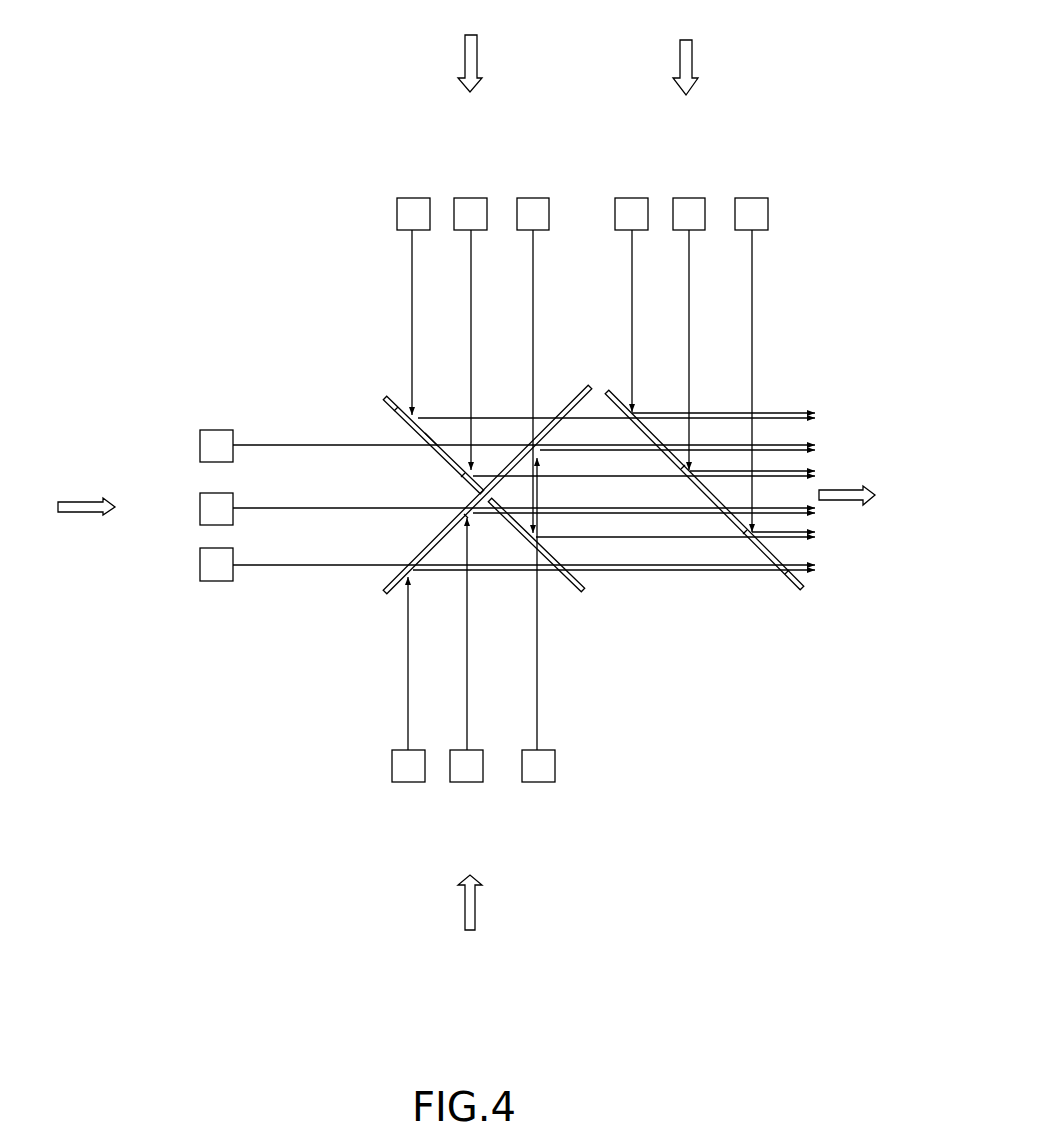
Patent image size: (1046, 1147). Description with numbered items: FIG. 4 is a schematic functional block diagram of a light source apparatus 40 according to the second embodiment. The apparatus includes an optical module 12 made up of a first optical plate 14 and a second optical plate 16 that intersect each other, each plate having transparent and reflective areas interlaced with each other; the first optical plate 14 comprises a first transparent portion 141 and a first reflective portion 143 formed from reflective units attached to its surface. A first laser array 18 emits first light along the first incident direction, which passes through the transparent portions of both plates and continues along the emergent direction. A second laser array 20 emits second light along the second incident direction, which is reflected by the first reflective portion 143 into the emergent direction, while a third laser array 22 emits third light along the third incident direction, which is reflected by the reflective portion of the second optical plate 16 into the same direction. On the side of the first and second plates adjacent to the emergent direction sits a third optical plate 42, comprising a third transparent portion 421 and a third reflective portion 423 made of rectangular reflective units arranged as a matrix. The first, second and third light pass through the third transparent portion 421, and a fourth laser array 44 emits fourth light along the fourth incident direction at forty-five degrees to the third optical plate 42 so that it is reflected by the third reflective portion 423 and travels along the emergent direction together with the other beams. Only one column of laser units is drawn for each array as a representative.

The light source apparatus 40 is at (771, 84).
The optical module 12 is at (306, 378).
The first optical plate 14 is at (388, 402).
The first transparent portion 141 is at (430, 433).
The first reflective portion 143 is at (346, 420).
The second optical plate 16 is at (388, 588).
The first laser array 18 is at (153, 438).
The second laser array 20 is at (542, 155).
The third laser array 22 is at (553, 825).
The third optical plate 42 is at (802, 588).
The third transparent portion 421 is at (787, 577).
The third reflective portion 423 is at (613, 487).
The fourth laser array 44 is at (760, 161).